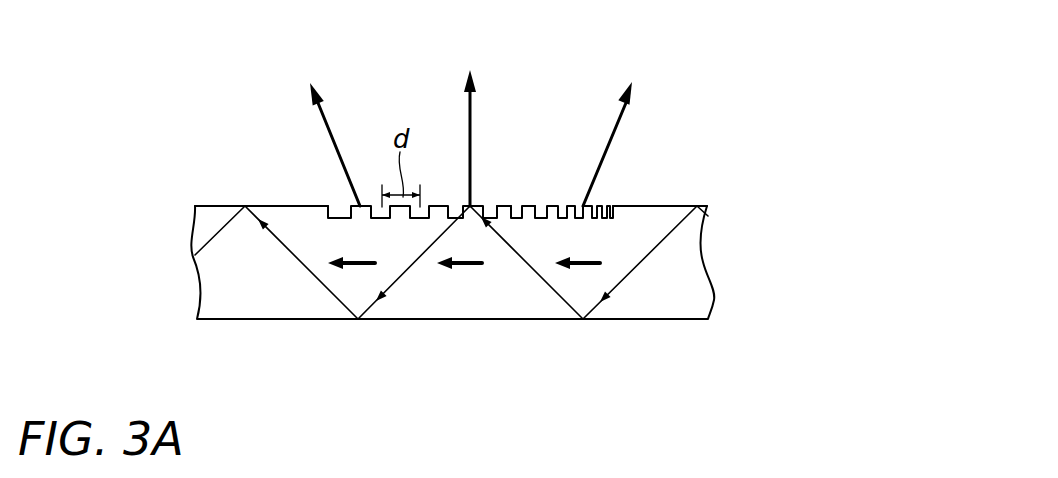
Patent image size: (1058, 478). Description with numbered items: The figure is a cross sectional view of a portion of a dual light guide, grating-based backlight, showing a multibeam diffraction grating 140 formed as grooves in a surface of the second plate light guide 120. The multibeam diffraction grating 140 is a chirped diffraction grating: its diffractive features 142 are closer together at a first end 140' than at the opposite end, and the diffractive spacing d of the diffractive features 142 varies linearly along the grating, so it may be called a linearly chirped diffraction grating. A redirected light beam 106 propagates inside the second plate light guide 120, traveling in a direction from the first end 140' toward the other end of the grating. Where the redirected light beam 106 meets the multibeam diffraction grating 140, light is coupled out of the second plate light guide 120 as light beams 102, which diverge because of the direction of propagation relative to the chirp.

The light beams 102 is at (648, 128).
The redirected light beam 106 is at (633, 285).
The second plate light guide 120 is at (703, 262).
The multibeam diffraction grating 140 is at (468, 173).
The first end of the multibeam diffraction grating 140' is at (668, 187).
The diffractive features 142 is at (502, 203).